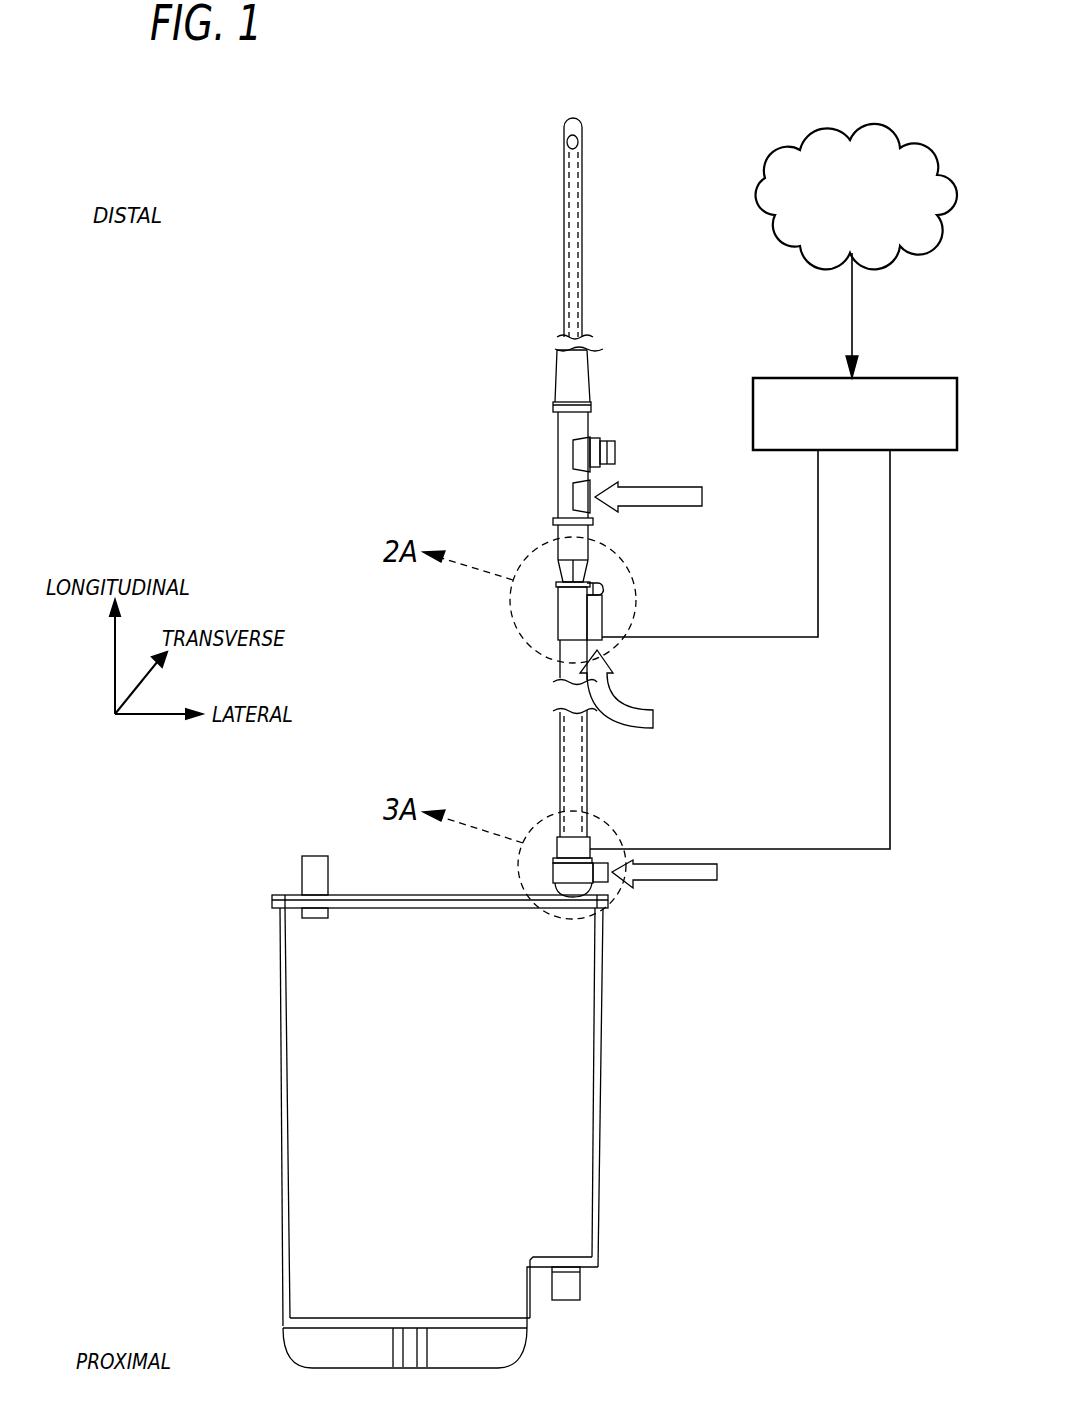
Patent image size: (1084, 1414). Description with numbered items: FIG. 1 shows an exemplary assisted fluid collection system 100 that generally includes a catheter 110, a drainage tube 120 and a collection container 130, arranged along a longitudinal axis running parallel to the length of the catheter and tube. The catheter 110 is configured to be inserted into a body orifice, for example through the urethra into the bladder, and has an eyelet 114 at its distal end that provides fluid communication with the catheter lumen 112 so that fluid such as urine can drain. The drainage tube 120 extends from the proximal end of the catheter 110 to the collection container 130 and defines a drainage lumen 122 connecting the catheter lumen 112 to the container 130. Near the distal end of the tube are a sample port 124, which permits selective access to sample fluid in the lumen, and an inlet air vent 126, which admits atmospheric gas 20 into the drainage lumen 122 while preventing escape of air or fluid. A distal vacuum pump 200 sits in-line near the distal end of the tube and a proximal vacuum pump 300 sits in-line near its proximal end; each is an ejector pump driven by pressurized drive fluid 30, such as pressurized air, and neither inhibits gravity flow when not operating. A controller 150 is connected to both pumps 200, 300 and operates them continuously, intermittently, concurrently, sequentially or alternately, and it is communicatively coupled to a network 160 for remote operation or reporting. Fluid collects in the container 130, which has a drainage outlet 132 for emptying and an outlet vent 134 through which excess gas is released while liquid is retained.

The assisted fluid collection system 100 is at (298, 196).
The catheter 110 is at (565, 207).
The catheter lumen 112 is at (574, 268).
The eyelet 114 is at (570, 142).
The drainage tube 120 is at (560, 674).
The drainage lumen 122 is at (573, 737).
The sample port 124 is at (590, 452).
The inlet air vent 126 is at (592, 497).
The collection container 130 is at (338, 1023).
The drainage outlet 132 is at (580, 1285).
The outlet vent 134 is at (302, 876).
The controller 150 is at (788, 378).
The network 160 is at (836, 133).
The distal vacuum pump 200 is at (560, 622).
The proximal vacuum pump 300 is at (568, 857).
The atmospheric gas 20 is at (660, 487).
The pressurized drive fluid 30 is at (653, 728).